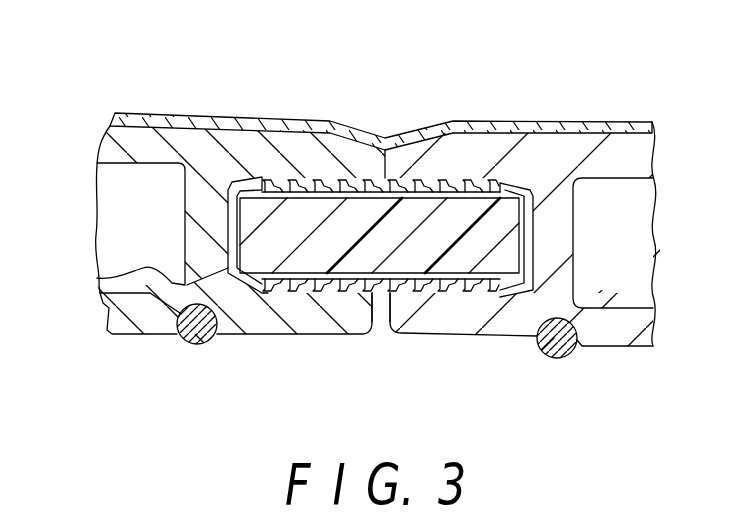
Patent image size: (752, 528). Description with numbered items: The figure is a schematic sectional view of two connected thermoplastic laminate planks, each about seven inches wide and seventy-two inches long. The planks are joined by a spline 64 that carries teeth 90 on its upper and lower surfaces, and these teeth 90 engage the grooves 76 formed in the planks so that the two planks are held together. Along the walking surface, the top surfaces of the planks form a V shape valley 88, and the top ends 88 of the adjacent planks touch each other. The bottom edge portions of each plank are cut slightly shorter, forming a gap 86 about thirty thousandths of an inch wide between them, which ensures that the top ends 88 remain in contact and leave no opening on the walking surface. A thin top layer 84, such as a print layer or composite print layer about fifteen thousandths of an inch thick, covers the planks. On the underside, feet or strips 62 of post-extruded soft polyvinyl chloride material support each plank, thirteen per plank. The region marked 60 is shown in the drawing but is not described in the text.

The right housing cavity 60 is at (620, 265).
The feet or strips 62 is at (540, 357).
The spline 64 is at (240, 167).
The grooves 76 is at (100, 277).
The top layer 84 is at (508, 120).
The gap 86 is at (376, 352).
The V shape valley 88 is at (387, 110).
The teeth 90 is at (308, 118).